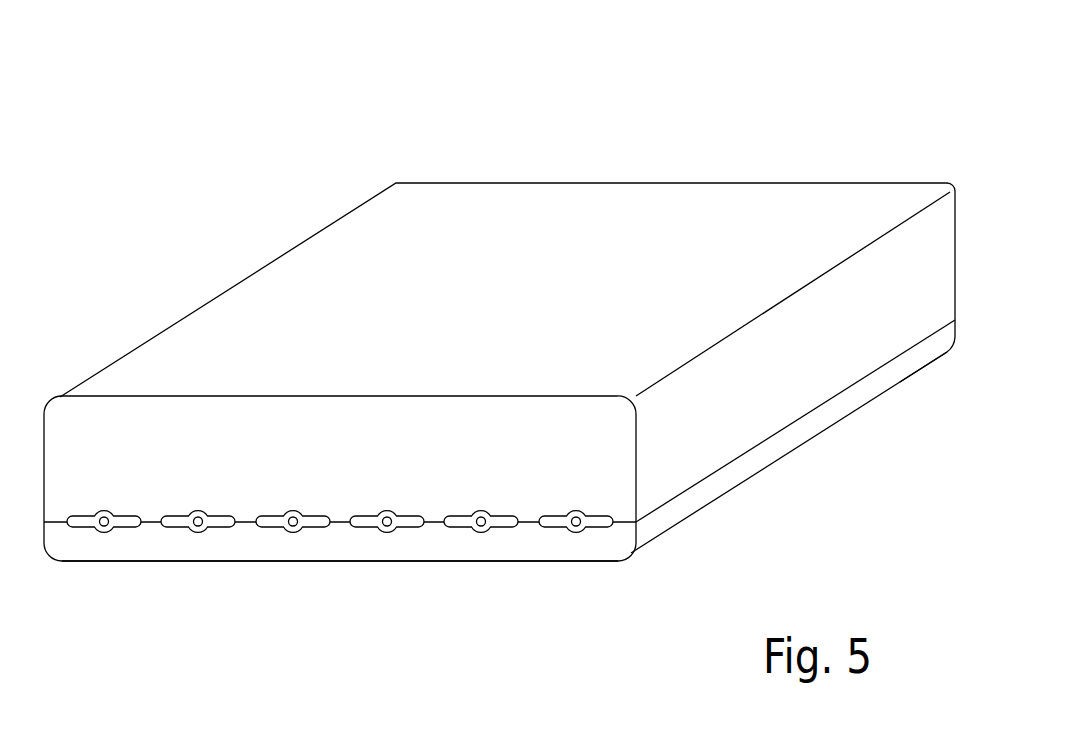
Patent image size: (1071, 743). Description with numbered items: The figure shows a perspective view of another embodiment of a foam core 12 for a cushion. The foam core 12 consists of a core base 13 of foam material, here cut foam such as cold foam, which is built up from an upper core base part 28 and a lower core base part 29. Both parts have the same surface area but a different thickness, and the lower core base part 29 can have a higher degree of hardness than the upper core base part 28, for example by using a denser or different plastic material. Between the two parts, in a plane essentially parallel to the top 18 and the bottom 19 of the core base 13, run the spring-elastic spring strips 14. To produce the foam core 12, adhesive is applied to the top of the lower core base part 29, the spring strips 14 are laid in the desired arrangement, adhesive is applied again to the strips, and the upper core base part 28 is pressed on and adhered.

The foam core 12 is at (292, 167).
The core base 13 is at (753, 459).
The spring strips 14 is at (103, 532).
The top 18 is at (595, 232).
The bottom 19 is at (395, 561).
The upper core base part 28 is at (888, 268).
The lower core base part 29 is at (895, 370).